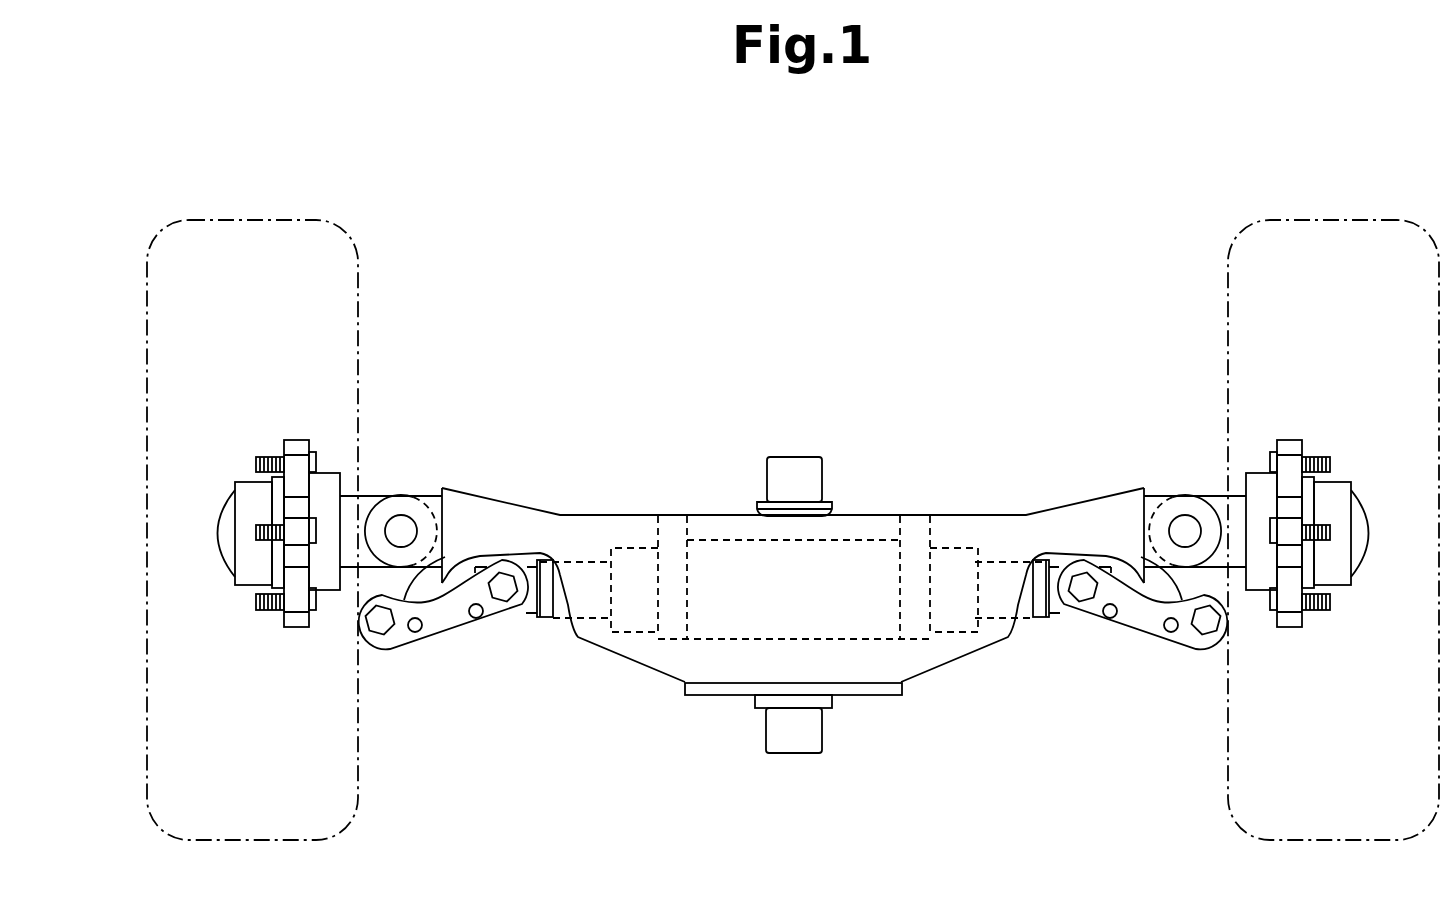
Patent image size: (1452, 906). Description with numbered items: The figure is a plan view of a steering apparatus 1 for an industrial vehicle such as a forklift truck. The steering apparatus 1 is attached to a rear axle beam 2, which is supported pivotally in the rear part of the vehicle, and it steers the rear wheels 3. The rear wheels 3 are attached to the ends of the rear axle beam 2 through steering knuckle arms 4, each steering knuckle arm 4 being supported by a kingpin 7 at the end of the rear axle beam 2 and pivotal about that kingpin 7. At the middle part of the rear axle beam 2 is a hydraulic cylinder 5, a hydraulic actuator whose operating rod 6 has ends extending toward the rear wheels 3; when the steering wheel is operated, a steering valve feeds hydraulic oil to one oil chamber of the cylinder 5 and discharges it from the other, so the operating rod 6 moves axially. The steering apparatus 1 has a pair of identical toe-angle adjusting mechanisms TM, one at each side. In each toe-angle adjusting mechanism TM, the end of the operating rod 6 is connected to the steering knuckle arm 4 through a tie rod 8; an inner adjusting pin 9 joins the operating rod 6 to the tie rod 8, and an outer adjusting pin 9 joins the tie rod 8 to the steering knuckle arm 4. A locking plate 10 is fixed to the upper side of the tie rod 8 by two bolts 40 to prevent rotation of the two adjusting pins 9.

The steering apparatus 1 is at (679, 382).
The rear axle beam 2 is at (985, 527).
The rear wheels 3 is at (256, 240).
The steering knuckle arm 4 is at (372, 498).
The hydraulic cylinder 5 is at (722, 537).
The operating rod 6 is at (548, 610).
The kingpin 7 is at (403, 527).
The tie rod 8 is at (476, 619).
The adjusting pin 9 is at (377, 630).
The locking plate 10 is at (415, 633).
The bolts 40 is at (405, 640).
The toe-angle adjusting mechanism TM is at (522, 709).